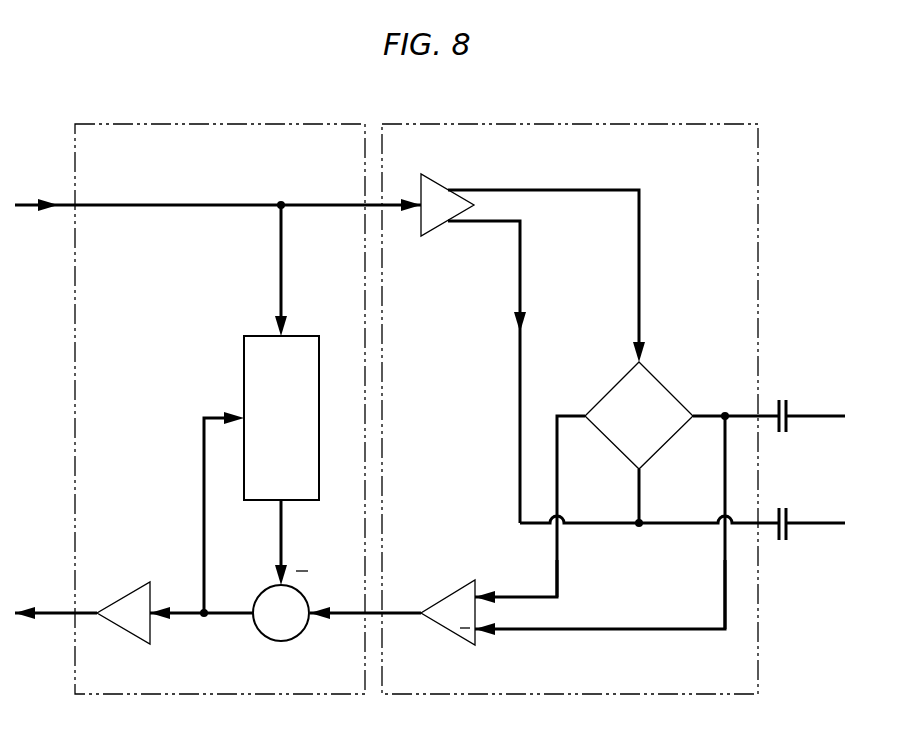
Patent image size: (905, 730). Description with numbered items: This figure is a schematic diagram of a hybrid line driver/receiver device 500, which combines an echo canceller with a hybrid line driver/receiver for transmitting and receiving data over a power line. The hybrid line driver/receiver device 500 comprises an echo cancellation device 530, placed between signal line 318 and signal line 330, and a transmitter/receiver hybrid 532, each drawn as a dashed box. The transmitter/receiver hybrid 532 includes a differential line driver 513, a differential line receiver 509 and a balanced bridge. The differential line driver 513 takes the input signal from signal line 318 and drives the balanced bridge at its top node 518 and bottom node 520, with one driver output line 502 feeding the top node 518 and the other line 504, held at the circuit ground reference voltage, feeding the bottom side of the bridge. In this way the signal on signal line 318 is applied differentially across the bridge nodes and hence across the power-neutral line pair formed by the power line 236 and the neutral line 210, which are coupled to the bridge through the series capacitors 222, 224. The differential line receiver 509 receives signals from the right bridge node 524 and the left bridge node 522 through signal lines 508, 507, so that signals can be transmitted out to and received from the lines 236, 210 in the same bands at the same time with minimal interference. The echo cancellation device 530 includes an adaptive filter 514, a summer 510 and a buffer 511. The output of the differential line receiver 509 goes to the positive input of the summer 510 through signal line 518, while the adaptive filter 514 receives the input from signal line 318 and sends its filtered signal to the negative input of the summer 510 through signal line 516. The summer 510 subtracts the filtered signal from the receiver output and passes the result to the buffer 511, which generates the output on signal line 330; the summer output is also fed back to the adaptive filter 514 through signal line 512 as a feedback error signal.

The hybrid line driver/receiver device 500 is at (95, 92).
The echo cancellation device 530 is at (220, 124).
The transmitter/receiver hybrid 532 is at (580, 124).
The signal line 318 is at (68, 205).
The differential line driver 513 is at (440, 180).
The first drive signal line 502 is at (584, 189).
The signal line 504 is at (518, 278).
The top bridge node 518 is at (636, 362).
The left bridge node 522 is at (585, 416).
The right bridge node 524 is at (693, 414).
The bottom bridge node 520 is at (638, 470).
The first capacitor 222 is at (788, 400).
The power line 236 is at (818, 418).
The second capacitor 224 is at (788, 508).
The neutral line 210 is at (818, 526).
The signal line 508 is at (556, 572).
The signal line 507 is at (724, 580).
The differential line receiver 509 is at (440, 628).
The summer 510 is at (264, 636).
The signal line 516 is at (284, 539).
The adaptive filter 514 is at (320, 380).
The signal line 512 is at (203, 452).
The buffer 511 is at (138, 584).
The signal line 330 is at (58, 612).